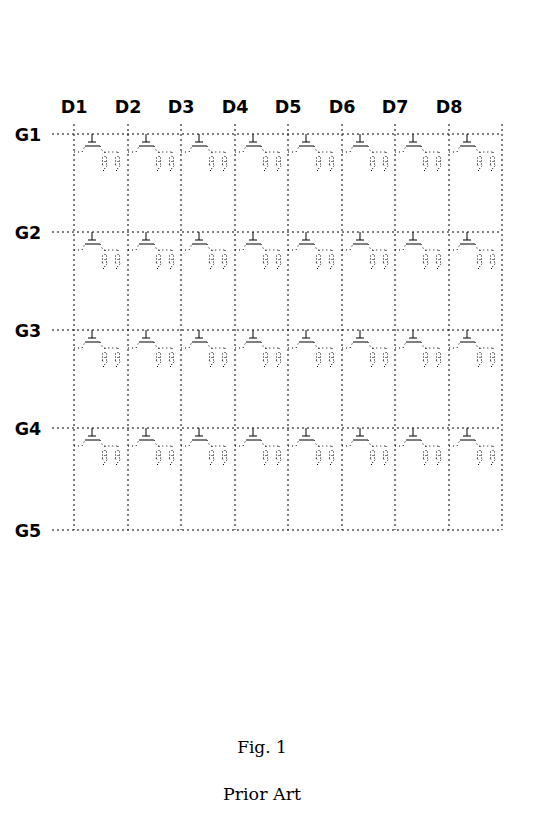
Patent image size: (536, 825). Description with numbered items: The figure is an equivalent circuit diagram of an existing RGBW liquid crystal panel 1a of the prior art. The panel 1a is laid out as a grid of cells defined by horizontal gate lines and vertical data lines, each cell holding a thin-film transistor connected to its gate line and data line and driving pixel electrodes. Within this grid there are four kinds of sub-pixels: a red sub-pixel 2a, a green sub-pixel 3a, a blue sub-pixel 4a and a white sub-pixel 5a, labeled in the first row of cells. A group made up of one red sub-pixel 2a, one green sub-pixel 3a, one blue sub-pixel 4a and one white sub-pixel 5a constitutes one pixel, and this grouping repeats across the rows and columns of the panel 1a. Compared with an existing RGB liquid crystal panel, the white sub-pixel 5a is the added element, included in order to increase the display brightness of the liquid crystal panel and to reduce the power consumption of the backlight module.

The RGBW liquid crystal panel 1a is at (277, 326).
The red sub-pixel 2a is at (227, 145).
The green sub-pixel 3a is at (108, 147).
The blue sub-pixel 4a is at (163, 147).
The white sub-pixel 5a is at (268, 146).